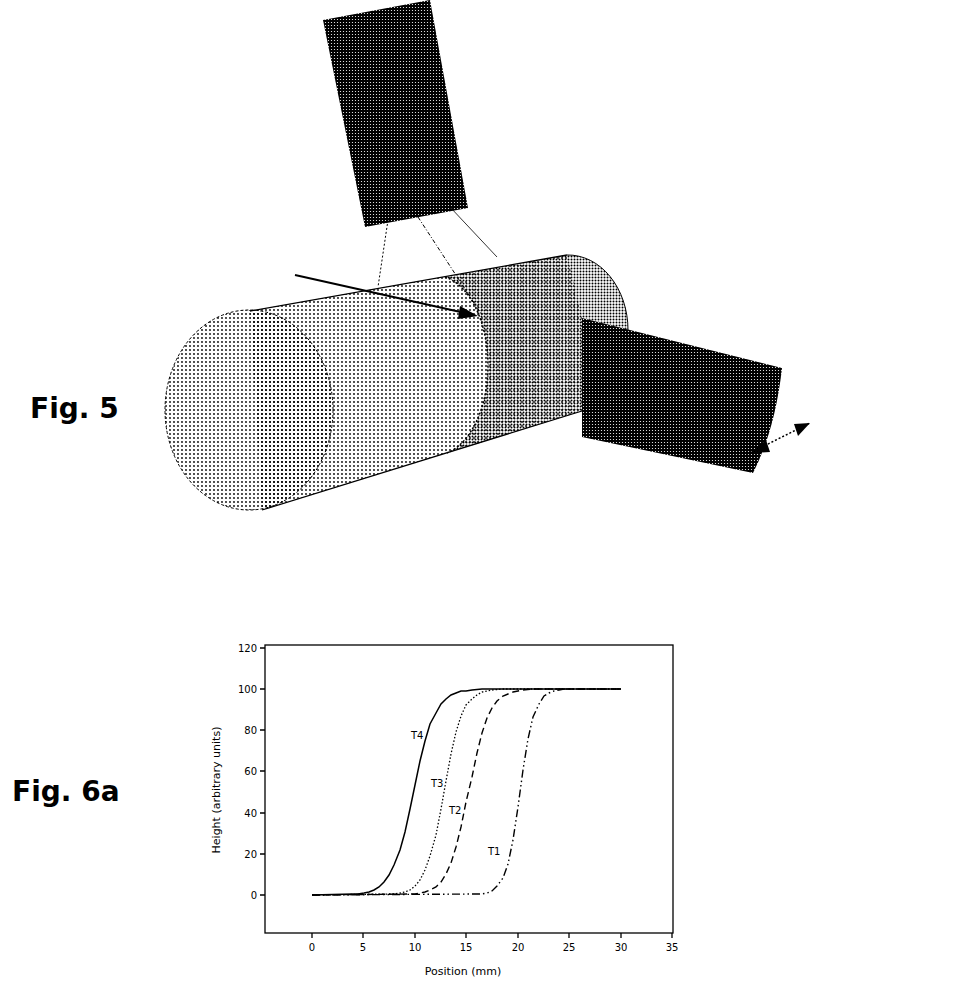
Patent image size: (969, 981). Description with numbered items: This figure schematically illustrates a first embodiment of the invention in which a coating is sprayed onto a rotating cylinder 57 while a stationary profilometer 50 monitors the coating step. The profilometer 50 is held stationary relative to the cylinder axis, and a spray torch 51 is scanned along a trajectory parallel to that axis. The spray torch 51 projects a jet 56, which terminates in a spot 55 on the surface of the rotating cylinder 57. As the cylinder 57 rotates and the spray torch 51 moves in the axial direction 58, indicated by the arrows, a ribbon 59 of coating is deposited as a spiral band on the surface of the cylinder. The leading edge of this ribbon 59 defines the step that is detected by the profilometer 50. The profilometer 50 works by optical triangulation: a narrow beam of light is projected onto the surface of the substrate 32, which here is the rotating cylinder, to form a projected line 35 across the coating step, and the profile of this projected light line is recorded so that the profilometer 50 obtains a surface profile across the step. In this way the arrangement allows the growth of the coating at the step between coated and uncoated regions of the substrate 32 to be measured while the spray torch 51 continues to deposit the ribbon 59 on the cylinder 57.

The profilometer 50 is at (442, 52).
The projected line 35 is at (487, 288).
The substrate 32 is at (538, 258).
The axial direction 58 is at (805, 468).
The ribbon 59 is at (488, 304).
The spray torch 51 is at (725, 348).
The spot 55 is at (491, 352).
The jet 56 is at (518, 384).
The rotating cylinder 57 is at (357, 455).